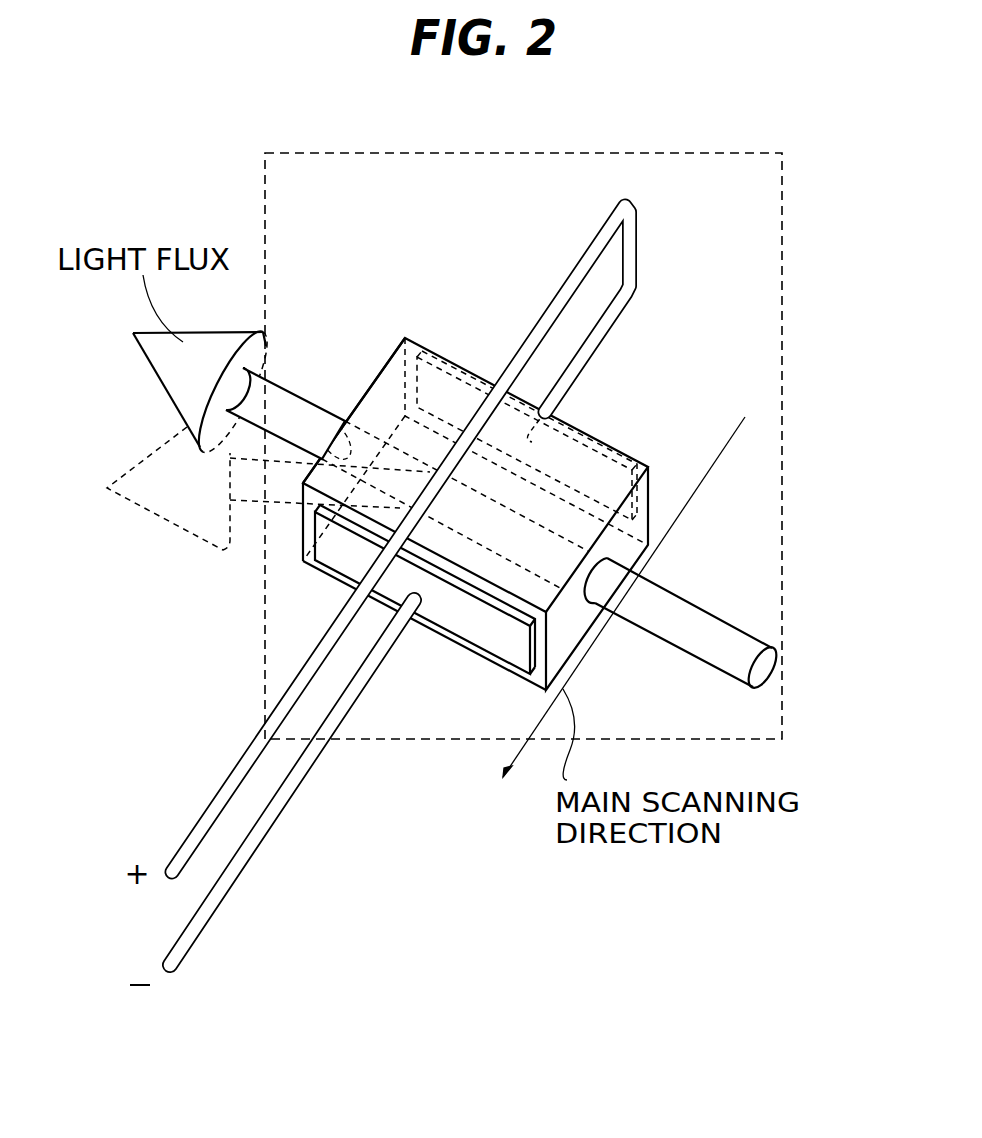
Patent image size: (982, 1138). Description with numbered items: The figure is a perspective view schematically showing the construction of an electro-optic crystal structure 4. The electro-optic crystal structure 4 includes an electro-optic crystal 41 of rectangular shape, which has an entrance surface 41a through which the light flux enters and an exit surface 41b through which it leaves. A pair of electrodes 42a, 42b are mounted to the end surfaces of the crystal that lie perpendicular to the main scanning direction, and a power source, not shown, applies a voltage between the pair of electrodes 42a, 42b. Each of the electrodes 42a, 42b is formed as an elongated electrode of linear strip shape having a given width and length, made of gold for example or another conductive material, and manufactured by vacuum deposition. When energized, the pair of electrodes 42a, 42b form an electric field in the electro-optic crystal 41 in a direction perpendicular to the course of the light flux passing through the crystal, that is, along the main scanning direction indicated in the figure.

The electro-optic crystal structure 4 is at (827, 192).
The electro-optic crystal 41 is at (570, 458).
The entrance surface 41a is at (563, 643).
The exit surface 41b is at (351, 405).
The electrode 42a is at (620, 450).
The electrode 42b is at (472, 625).